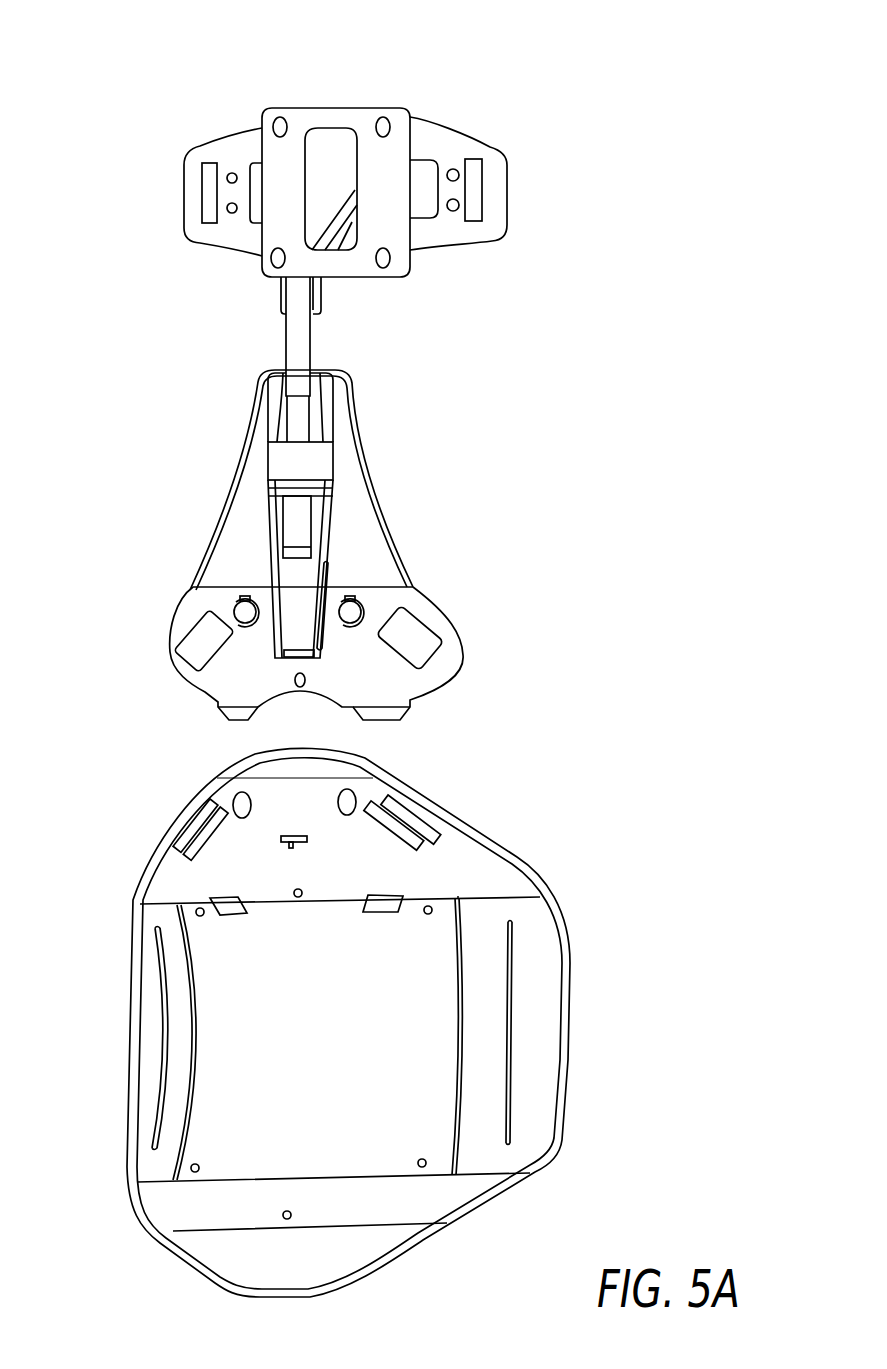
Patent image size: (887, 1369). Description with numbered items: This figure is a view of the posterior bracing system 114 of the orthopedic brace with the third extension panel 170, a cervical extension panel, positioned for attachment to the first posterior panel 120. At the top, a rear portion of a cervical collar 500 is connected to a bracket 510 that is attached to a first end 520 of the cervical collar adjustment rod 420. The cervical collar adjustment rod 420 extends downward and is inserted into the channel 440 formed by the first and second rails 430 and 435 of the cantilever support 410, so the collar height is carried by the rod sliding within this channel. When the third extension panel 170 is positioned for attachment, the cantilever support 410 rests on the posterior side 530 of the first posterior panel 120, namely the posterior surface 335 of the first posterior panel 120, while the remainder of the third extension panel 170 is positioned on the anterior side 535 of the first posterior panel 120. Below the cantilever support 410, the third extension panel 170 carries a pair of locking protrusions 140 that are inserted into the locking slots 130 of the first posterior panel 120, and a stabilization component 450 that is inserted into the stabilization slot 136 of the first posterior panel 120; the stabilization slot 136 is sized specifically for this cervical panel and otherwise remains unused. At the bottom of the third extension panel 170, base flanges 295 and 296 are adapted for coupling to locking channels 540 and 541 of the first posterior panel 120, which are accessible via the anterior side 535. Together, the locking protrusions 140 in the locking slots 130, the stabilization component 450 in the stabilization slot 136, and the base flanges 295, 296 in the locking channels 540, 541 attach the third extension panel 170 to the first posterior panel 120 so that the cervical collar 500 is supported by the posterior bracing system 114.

The cervical collar 500 is at (312, 94).
The bracket 510 is at (338, 215).
The first end of the cervical collar adjustment rod 520 is at (268, 290).
The cervical collar adjustment rod 420 is at (306, 350).
The channel 440 is at (311, 388).
The first rail 430 is at (272, 418).
The second rail 435 is at (330, 426).
The third extension panel 170 is at (228, 478).
The posterior bracing system 114 is at (639, 455).
The cantilever support 410 is at (342, 535).
The locking protrusions 140 is at (245, 612).
The stabilization component 450 is at (303, 657).
The base flange 295 is at (231, 711).
The base flange 296 is at (377, 711).
The first posterior panel 120 is at (579, 923).
The locking slots 130 is at (345, 800).
The posterior side 530 is at (178, 883).
The anterior side 535 is at (436, 800).
The posterior surface 335 is at (461, 868).
The stabilization slot 136 is at (294, 845).
The locking channel 540 is at (231, 914).
The locking channel 541 is at (374, 913).